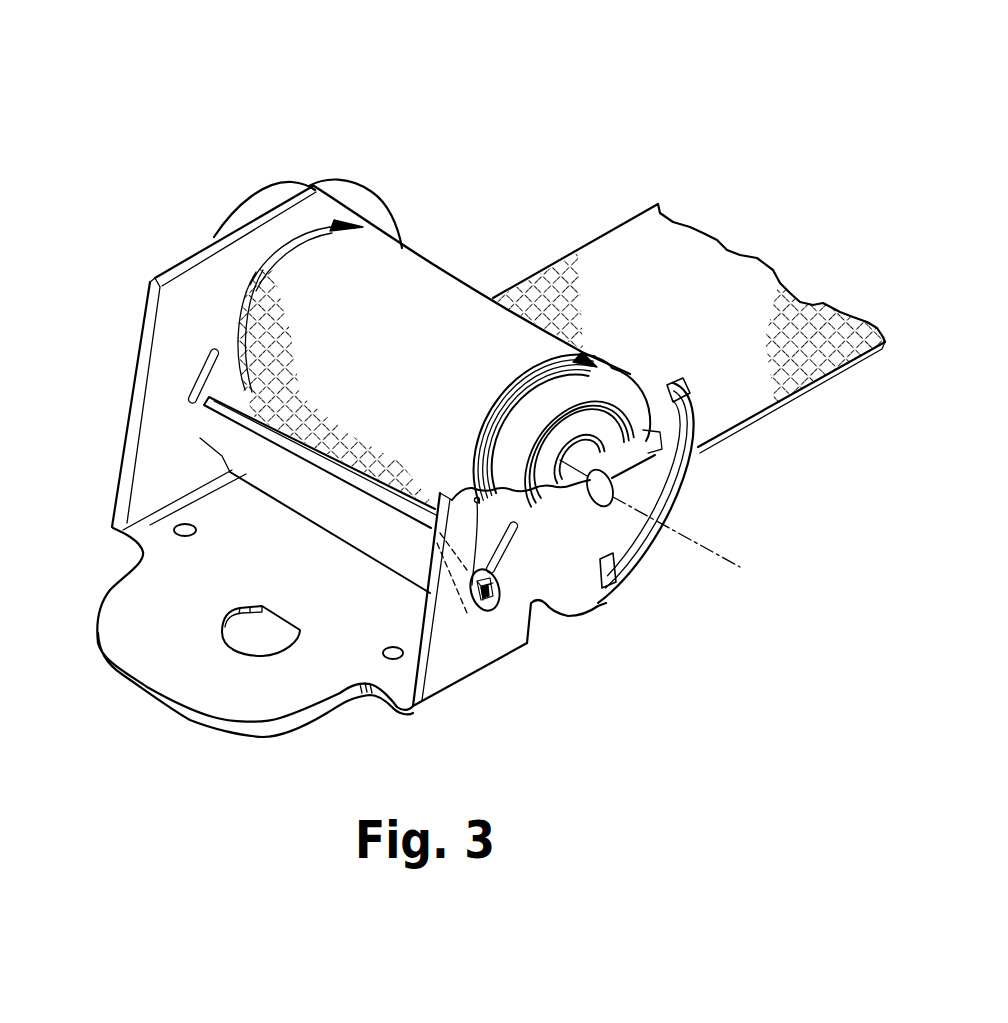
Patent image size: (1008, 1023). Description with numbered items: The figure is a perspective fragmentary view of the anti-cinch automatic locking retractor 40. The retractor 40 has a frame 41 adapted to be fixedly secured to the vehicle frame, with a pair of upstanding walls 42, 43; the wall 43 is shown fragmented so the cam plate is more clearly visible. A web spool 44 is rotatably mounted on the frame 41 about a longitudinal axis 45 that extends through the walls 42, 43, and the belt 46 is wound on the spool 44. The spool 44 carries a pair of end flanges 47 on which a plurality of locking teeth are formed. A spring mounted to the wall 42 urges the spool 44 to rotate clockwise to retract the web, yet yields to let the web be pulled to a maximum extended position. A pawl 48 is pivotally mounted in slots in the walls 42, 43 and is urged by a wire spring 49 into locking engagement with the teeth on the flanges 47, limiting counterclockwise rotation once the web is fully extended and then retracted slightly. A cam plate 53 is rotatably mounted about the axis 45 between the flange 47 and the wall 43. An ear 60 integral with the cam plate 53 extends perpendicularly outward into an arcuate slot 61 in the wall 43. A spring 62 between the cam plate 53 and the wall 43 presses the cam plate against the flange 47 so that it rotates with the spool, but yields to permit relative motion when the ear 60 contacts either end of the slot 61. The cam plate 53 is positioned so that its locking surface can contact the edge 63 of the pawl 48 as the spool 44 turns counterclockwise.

The anti-cinch automatic locking retractor 40 is at (263, 108).
The frame 41 is at (114, 531).
The upstanding wall 42 is at (160, 335).
The upstanding wall 43 is at (567, 605).
The web spool 44 is at (262, 270).
The longitudinal axis 45 is at (727, 567).
The belt 46 is at (617, 247).
The end flange 47 is at (578, 350).
The pawl 48 is at (243, 460).
The wire spring 49 is at (443, 528).
The cam plate 53 is at (627, 372).
The ear 60 is at (618, 577).
The arcuate slot 61 is at (667, 490).
The spring 62 is at (675, 380).
The edge 63 is at (327, 464).